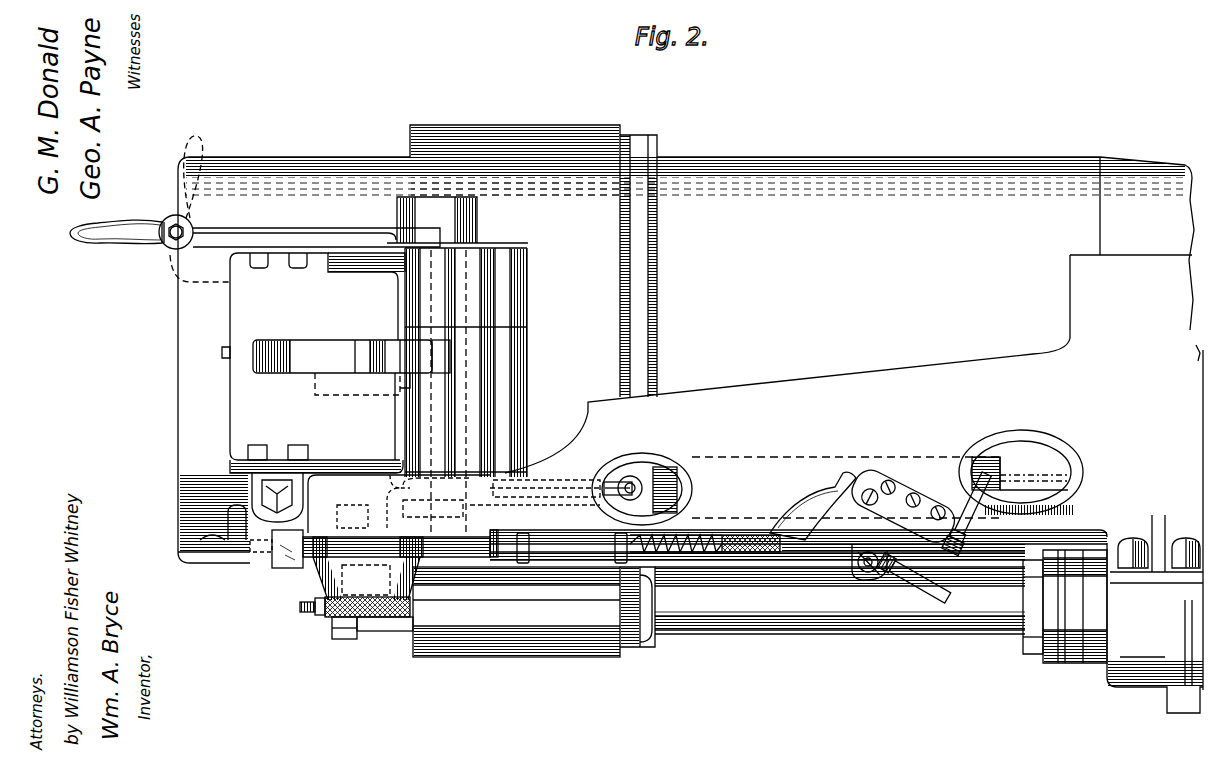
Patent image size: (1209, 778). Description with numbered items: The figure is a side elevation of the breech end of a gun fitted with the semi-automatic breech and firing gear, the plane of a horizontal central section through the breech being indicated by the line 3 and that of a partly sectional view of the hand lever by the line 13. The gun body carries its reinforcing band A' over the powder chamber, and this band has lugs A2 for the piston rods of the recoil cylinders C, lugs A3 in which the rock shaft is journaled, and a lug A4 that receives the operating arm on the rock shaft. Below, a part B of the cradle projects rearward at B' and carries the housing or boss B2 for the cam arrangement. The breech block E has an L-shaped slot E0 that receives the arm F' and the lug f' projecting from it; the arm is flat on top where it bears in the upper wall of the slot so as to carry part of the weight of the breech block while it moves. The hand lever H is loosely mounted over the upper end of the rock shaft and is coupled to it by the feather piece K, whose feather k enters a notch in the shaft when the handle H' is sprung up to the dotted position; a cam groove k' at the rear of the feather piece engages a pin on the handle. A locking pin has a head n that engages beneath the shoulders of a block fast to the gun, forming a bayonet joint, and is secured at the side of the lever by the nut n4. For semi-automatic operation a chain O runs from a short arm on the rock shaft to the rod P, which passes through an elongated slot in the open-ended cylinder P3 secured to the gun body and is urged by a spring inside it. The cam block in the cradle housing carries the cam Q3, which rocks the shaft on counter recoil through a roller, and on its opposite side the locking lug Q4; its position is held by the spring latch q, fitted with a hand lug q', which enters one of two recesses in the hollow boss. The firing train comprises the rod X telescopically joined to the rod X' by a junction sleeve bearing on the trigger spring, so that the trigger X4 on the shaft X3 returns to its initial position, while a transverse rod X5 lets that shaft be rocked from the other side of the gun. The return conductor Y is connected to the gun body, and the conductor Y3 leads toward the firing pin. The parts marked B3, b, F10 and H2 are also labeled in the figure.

The reinforcing band A' is at (689, 344).
The lugs A2 is at (534, 612).
The lugs A3 is at (465, 305).
The lug A4 is at (432, 364).
The cradle part B is at (1155, 531).
The rearward projection of cradle B' is at (501, 506).
The housing (boss) for cam arrangement B2 is at (366, 578).
The inner block B3 is at (387, 501).
The recoil cylinder C is at (1080, 660).
The breech block E is at (317, 363).
The L-shaped slot E0 is at (327, 356).
The arm F' is at (368, 334).
The lug f' is at (357, 402).
The rod F10 is at (545, 507).
The hand lever H is at (316, 225).
The handle H' is at (151, 194).
The lever block H2 is at (433, 208).
The feather piece K is at (267, 236).
The feather k is at (751, 519).
The cam groove k' is at (676, 517).
The head of pin n is at (847, 617).
The nut n4 is at (188, 228).
The chain O is at (566, 480).
The rod P is at (647, 488).
The open-ended cylinder P3 is at (665, 480).
The slot b is at (1048, 440).
The cam Q3 is at (345, 508).
The locking lug Q4 is at (347, 637).
The spring latch q is at (311, 627).
The hand lug q' is at (285, 619).
The rod X is at (240, 534).
The rod X' is at (798, 582).
The shaft X3 is at (869, 490).
The trigger X4 is at (832, 512).
The transverse rod X5 is at (872, 572).
The return conductor Y is at (965, 508).
The conductor Y3 is at (949, 596).
The section line 3- 3 is at (700, 354).
The section line 13- 13 is at (65, 170).